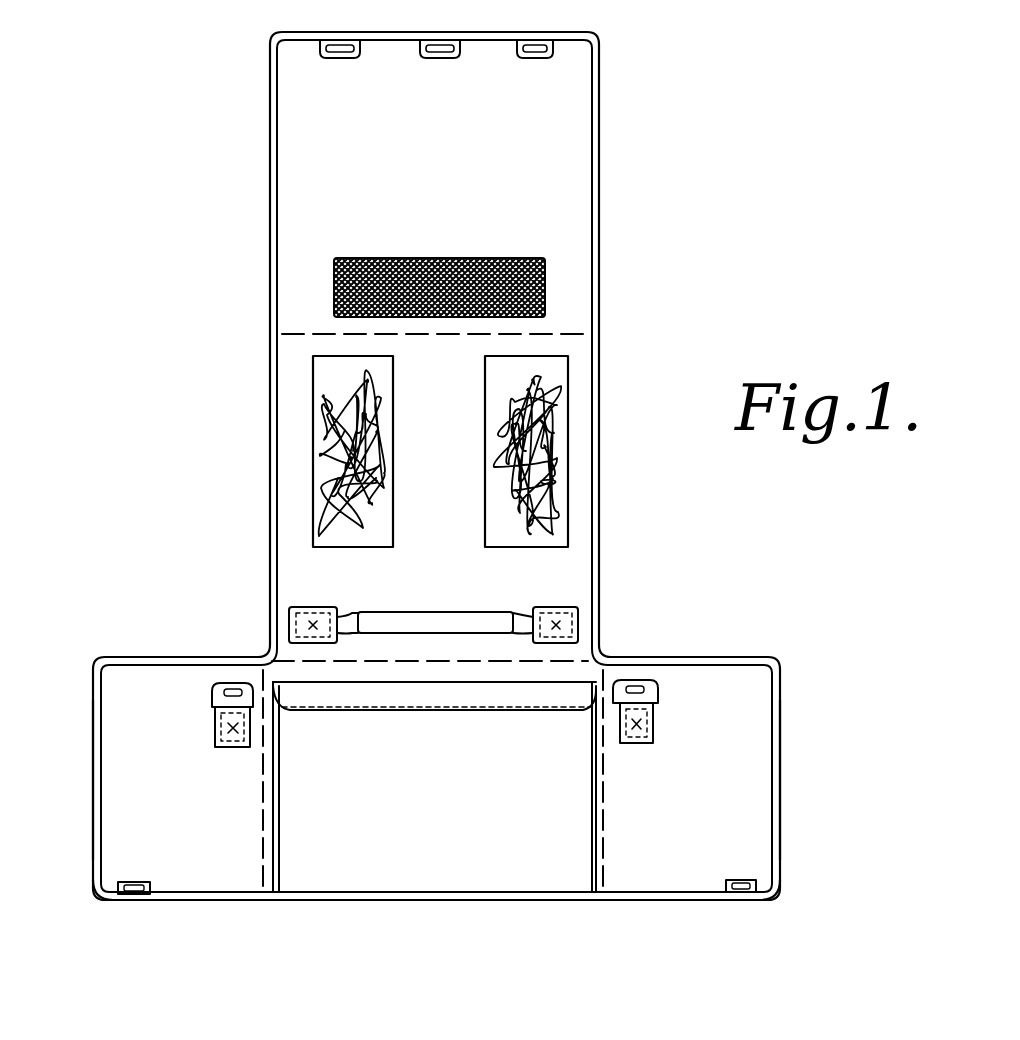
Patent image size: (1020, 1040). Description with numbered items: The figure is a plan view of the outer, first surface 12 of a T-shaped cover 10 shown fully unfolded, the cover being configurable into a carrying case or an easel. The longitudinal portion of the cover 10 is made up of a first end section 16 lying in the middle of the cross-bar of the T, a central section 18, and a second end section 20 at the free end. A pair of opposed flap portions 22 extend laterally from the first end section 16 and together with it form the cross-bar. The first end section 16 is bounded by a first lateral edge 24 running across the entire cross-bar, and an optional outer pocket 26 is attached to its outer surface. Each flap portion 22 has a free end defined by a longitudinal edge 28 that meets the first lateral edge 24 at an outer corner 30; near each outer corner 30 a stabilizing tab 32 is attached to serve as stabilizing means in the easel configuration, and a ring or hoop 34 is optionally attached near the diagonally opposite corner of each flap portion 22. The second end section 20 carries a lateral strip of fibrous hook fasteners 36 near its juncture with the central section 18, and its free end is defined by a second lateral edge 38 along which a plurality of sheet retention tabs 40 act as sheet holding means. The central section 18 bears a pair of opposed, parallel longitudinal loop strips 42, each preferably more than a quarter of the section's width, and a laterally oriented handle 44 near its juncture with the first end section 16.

The cover 10 is at (672, 133).
The first surface 12 is at (600, 206).
The first end section 16 is at (290, 672).
The central section 18 is at (455, 485).
The second end section 20 is at (455, 199).
The flap portions 22 is at (197, 806).
The first lateral edge 24 is at (418, 904).
The outer pocket 26 is at (503, 854).
The longitudinal edge 28 is at (92, 800).
The outer corner 30 is at (94, 903).
The stabilizing tab 32 is at (150, 882).
The ring or hoop 34 is at (212, 696).
The lateral strip of fibrous hook fasteners 36 is at (540, 258).
The second lateral edge 38 is at (495, 32).
The sheet retention tabs 40 is at (445, 58).
The longitudinal loop strips 42 is at (322, 485).
The handle 44 is at (449, 611).